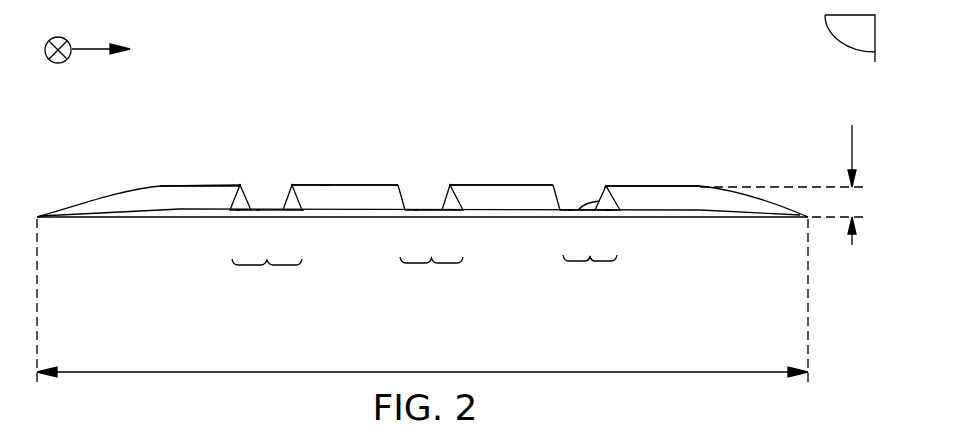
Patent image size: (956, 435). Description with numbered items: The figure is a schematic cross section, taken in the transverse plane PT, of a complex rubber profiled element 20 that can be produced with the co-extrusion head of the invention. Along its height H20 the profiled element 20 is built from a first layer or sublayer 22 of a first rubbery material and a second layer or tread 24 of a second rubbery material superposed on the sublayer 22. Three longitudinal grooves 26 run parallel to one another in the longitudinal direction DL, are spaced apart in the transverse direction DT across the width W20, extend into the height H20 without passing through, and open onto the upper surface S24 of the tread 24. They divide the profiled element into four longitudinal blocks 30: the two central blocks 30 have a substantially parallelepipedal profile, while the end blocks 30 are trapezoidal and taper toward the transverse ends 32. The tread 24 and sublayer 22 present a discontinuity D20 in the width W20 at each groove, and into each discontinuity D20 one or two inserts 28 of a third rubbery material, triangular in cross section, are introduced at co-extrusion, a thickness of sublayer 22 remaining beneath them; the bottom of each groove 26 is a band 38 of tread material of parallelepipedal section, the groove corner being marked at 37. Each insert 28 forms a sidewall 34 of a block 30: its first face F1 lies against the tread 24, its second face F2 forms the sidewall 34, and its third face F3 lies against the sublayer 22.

The complex rubber profiled element 20 is at (724, 118).
The sublayer 22 is at (147, 219).
The tread 24 is at (137, 199).
The longitudinal grooves 26 is at (266, 188).
The insert 28 is at (246, 196).
The longitudinal blocks 30 is at (182, 197).
The transverse ends 32 is at (37, 215).
The sidewall 34 is at (248, 196).
The groove bottom corner 37 is at (237, 211).
The band 38 is at (258, 212).
The upper surface S24 is at (323, 184).
The first face F1 is at (618, 207).
The second face F2 is at (583, 212).
The third face F3 is at (610, 213).
The discontinuity D20 is at (424, 276).
The height H20 is at (798, 185).
The width W20 is at (422, 303).
The transverse direction DT is at (104, 35).
The longitudinal direction DL is at (59, 65).
The transverse plane PT is at (850, 38).